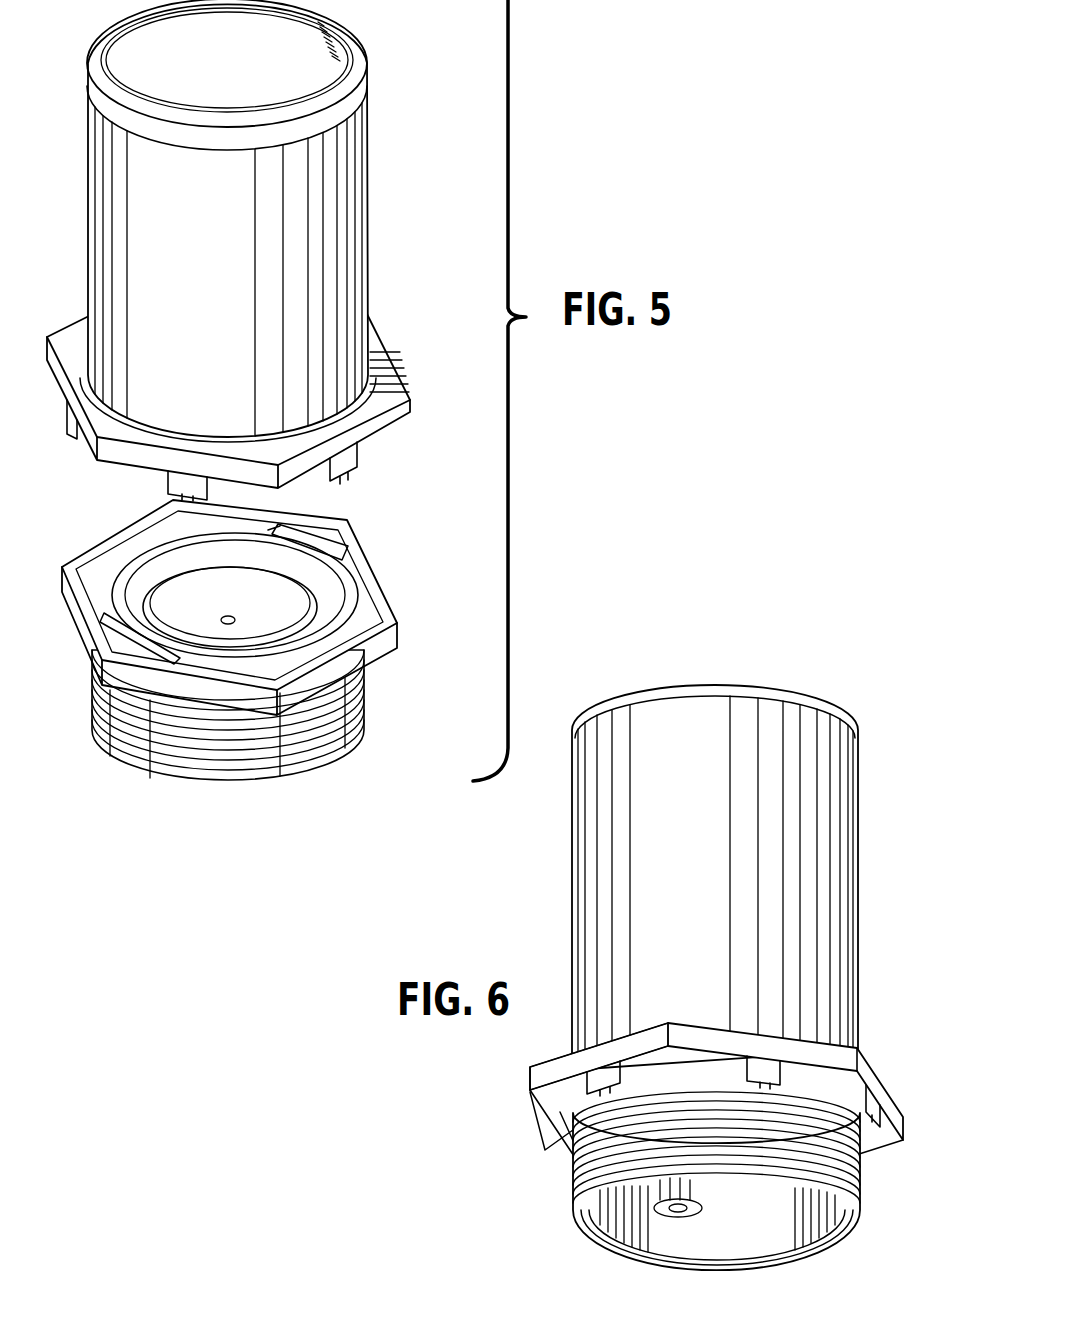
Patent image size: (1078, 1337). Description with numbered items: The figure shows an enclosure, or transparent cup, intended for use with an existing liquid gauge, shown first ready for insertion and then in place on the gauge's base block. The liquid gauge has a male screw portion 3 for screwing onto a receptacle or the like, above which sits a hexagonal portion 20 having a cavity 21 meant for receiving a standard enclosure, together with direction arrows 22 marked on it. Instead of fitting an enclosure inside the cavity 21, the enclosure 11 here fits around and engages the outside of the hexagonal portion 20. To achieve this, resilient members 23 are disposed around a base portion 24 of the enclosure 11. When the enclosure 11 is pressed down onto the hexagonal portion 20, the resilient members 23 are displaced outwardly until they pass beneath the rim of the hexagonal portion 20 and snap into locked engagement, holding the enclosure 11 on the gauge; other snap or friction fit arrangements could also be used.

In FIG. 5, the male screw portion 3 is at (370, 700).
In FIG. 6, the male screw portion 3 is at (572, 1182).
In FIG. 5, the enclosure 11 is at (353, 161).
In FIG. 6, the enclosure 11 is at (845, 807).
In FIG. 5, the hexagonal portion 20 is at (251, 597).
In FIG. 6, the hexagonal portion 20 is at (545, 1110).
In FIG. 5, the cavity 21 is at (187, 593).
In FIG. 5, the direction arrows 22 is at (330, 540).
In FIG. 5, the resilient members 23 is at (334, 474).
In FIG. 6, the resilient members 23 is at (885, 1118).
In FIG. 5, the base portion 24 is at (417, 400).
In FIG. 6, the base portion 24 is at (870, 1077).